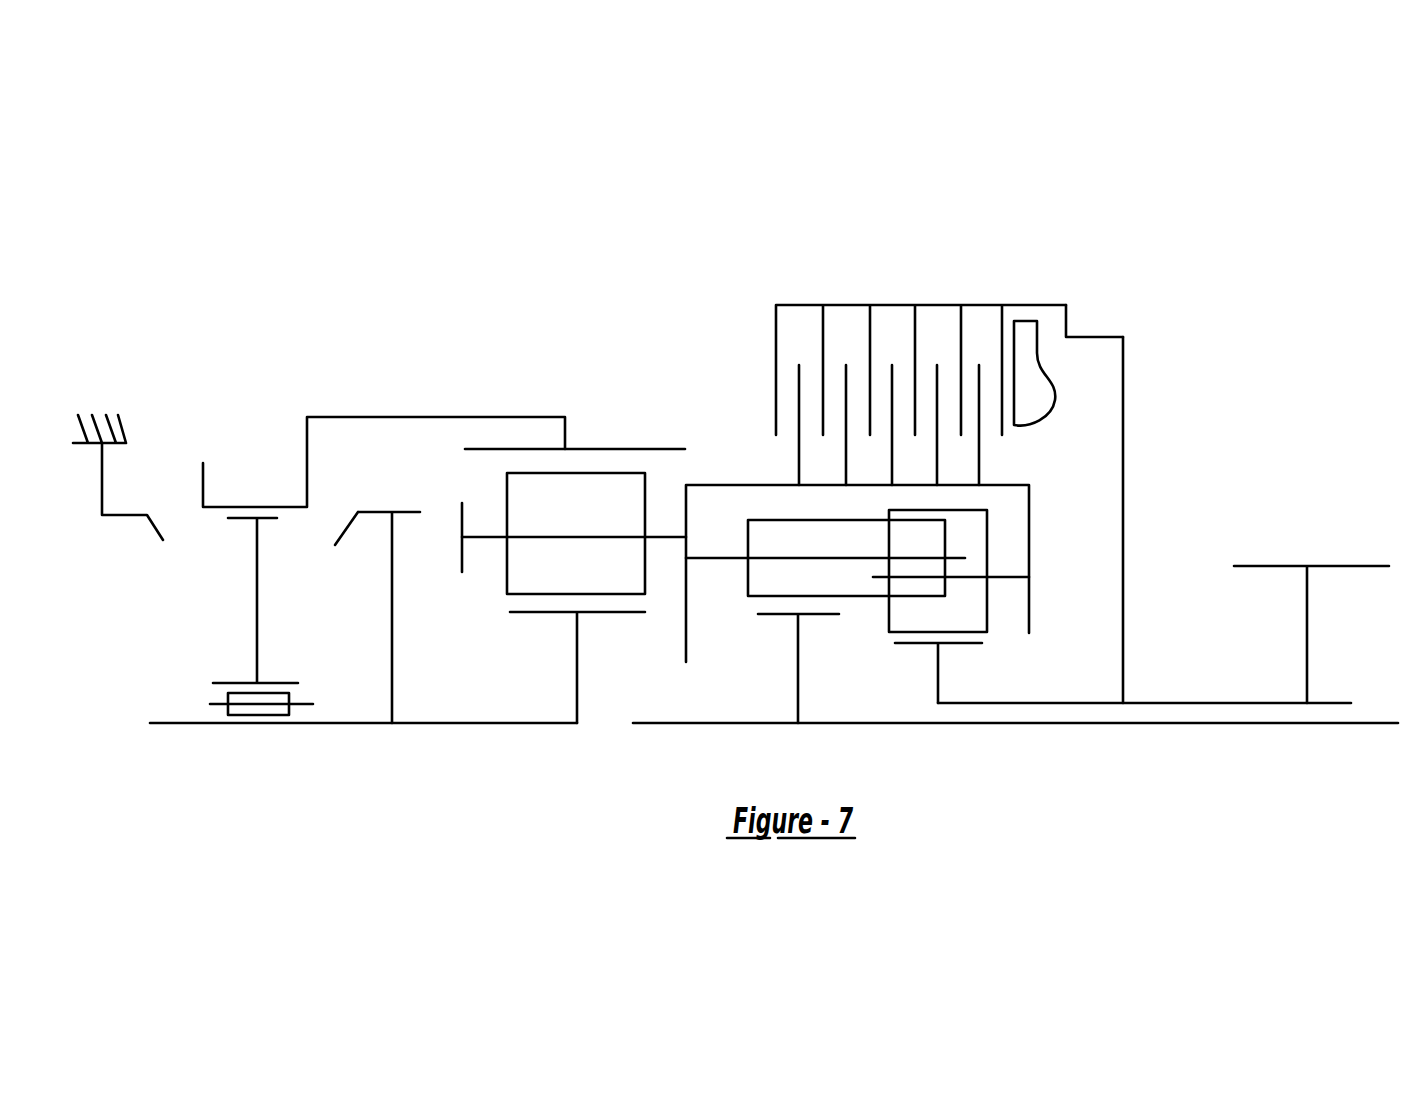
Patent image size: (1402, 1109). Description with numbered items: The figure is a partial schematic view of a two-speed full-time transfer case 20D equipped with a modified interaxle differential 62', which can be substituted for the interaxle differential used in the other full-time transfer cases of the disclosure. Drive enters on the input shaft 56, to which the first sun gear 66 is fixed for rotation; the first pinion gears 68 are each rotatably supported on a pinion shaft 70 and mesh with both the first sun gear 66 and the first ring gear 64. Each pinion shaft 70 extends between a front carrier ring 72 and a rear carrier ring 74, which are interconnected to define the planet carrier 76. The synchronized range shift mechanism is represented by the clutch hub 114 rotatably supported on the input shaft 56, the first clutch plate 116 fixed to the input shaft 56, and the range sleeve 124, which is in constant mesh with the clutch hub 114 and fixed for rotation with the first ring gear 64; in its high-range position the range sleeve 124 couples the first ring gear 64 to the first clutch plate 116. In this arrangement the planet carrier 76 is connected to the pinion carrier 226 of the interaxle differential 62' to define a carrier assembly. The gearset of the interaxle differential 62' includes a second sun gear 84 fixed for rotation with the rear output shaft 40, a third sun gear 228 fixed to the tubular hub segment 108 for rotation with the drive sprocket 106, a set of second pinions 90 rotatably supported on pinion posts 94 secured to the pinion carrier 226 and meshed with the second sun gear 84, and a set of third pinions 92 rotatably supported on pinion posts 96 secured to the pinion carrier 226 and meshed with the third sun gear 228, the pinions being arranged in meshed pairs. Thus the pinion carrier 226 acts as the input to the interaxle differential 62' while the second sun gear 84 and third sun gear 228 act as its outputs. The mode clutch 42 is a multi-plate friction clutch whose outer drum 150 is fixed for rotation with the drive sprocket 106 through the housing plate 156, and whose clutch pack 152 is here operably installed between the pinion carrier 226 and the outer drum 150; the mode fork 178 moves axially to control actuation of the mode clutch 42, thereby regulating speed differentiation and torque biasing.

The range sleeve 124 is at (307, 465).
The clutch hub 114 is at (257, 641).
The input shaft 56 is at (170, 726).
The first clutch plate 116 is at (392, 672).
The first ring gear 64 is at (588, 449).
The first pinion gears 68 is at (616, 495).
The pinion shaft 70 is at (520, 537).
The front carrier ring 72 is at (462, 546).
The first sun gear 66 is at (577, 643).
The planet carrier 76 is at (666, 612).
The rear carrier ring 74 is at (688, 641).
The pinion posts 94 is at (703, 558).
The second pinions 90 is at (807, 530).
The third pinions 92 is at (963, 523).
The pinion posts 96 is at (1010, 577).
The second sun gear 84 is at (798, 683).
The third sun gear 228 is at (938, 680).
The tubular hub segment 108 is at (1163, 703).
The interaxle differential 62' is at (876, 704).
The rear output shaft 40 is at (1232, 724).
The outer drum 150 is at (862, 305).
The clutch pack 152 is at (799, 351).
The mode clutch 42 is at (1084, 324).
The housing plate 156 is at (1123, 512).
The mode fork 178 is at (1048, 405).
The transfer case 20D is at (1264, 414).
The pinion carrier 226 is at (1038, 603).
The drive sprocket 106 is at (1307, 633).